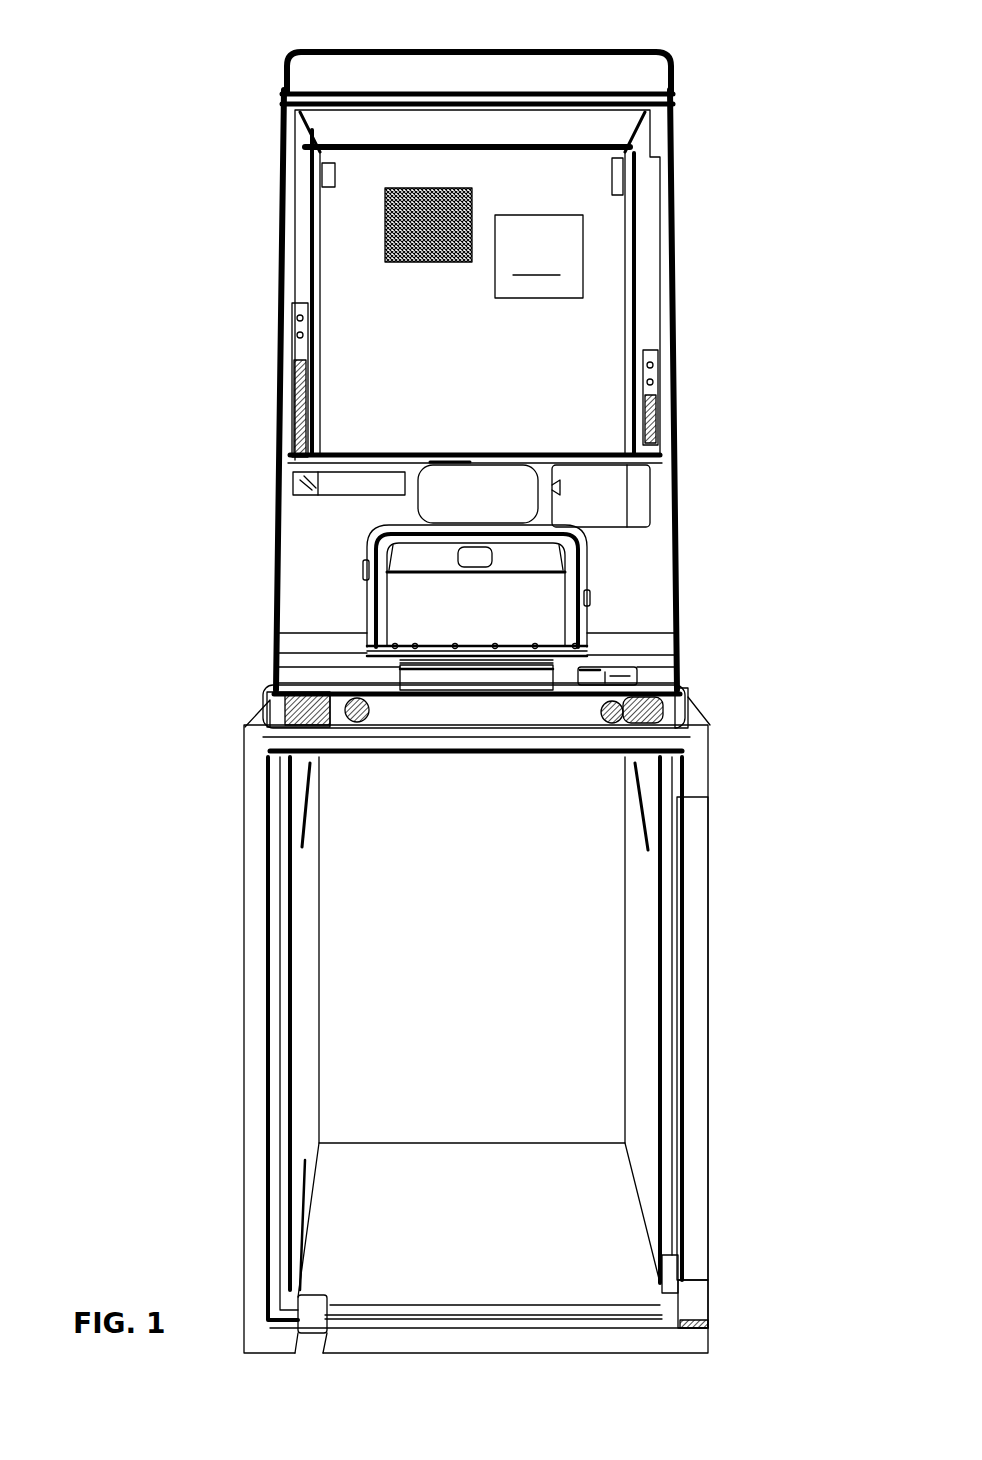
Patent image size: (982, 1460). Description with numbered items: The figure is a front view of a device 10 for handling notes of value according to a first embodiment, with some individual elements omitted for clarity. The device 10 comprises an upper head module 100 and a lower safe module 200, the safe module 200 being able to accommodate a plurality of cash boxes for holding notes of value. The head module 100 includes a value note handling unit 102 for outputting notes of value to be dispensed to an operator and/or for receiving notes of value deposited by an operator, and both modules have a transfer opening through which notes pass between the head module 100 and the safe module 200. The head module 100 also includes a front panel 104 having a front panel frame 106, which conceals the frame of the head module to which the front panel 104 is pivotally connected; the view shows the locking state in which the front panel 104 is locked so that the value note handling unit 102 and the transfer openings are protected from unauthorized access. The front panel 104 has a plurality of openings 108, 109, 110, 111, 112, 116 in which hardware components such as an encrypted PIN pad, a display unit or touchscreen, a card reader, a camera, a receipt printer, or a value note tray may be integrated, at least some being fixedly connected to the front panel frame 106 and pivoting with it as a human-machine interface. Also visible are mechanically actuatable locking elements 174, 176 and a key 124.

The device for handling notes of value 10 is at (156, 108).
The head module 100 is at (222, 374).
The value note handling unit 102 is at (535, 628).
The front panel 104 is at (693, 87).
The front panel frame 106 is at (643, 568).
The opening 108 is at (340, 487).
The opening 109 is at (425, 612).
The opening 110 is at (470, 495).
The opening 111 is at (460, 682).
The opening 112 is at (595, 517).
The opening 116 is at (592, 337).
The key 124 is at (365, 712).
The locking element 174 is at (640, 710).
The locking element 176 is at (305, 700).
The safe module 200 is at (218, 1012).